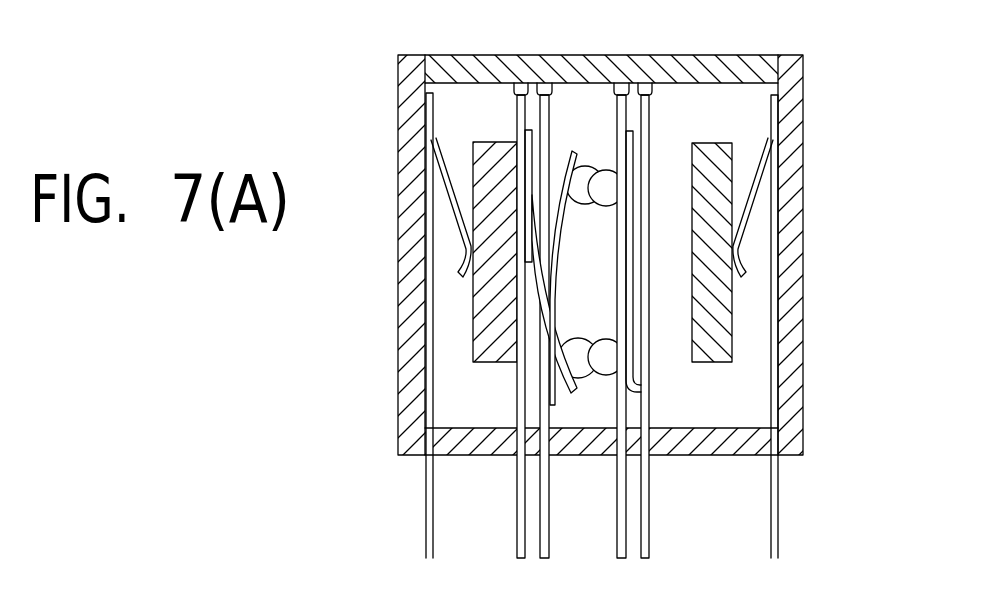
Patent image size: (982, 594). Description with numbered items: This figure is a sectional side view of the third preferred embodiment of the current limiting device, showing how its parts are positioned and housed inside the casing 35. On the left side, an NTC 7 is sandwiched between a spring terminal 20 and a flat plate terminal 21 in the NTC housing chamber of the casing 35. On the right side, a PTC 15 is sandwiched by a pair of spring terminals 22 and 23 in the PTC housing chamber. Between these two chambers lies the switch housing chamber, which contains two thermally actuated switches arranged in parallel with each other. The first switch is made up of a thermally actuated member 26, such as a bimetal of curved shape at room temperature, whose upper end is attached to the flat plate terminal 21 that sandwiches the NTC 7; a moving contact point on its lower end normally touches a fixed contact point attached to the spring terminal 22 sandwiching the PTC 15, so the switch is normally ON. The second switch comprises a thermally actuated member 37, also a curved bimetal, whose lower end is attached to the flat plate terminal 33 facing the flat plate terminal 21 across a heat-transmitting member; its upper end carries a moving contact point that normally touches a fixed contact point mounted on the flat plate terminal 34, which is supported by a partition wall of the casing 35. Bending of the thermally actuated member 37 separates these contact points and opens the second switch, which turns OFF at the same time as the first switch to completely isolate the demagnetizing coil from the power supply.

The NTC 7 is at (480, 153).
The PTC 15 is at (717, 167).
The spring terminal 20 is at (433, 326).
The flat plate terminal 21 is at (519, 93).
The spring terminal 22 is at (652, 115).
The spring terminal 23 is at (766, 333).
The thermally actuated member 26 is at (574, 397).
The flat plate terminal 33 is at (556, 91).
The flat plate terminal 34 is at (617, 143).
The casing 35 is at (806, 284).
The thermally actuated member 37 is at (573, 147).